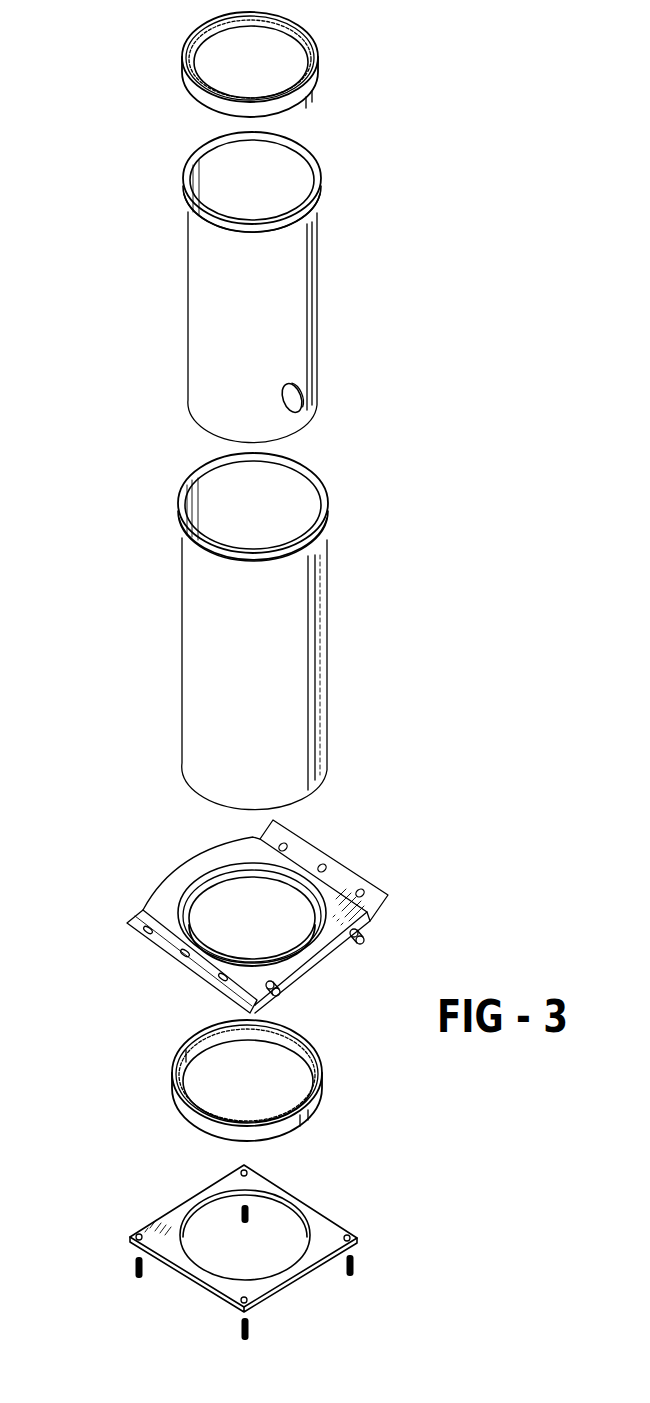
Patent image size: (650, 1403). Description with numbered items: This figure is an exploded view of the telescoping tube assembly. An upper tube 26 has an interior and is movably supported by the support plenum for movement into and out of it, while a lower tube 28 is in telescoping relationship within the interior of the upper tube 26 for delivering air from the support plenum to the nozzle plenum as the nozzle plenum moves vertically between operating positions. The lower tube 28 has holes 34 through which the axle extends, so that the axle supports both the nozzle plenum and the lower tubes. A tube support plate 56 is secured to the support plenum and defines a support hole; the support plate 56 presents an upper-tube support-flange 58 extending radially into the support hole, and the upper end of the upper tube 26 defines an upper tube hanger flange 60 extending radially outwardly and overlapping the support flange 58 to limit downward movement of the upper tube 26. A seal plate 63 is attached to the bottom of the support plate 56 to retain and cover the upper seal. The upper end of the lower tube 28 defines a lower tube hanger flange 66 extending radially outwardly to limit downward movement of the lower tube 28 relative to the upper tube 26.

The upper tube 26 is at (233, 631).
The lower tube 28 is at (243, 287).
The holes 34 is at (312, 400).
The tube support plate 56 is at (205, 916).
The upper-tube support-flange 58 is at (222, 893).
The upper tube hanger flange 60 is at (329, 508).
The seal plate 63 is at (165, 1222).
The lower tube hanger flange 66 is at (314, 161).